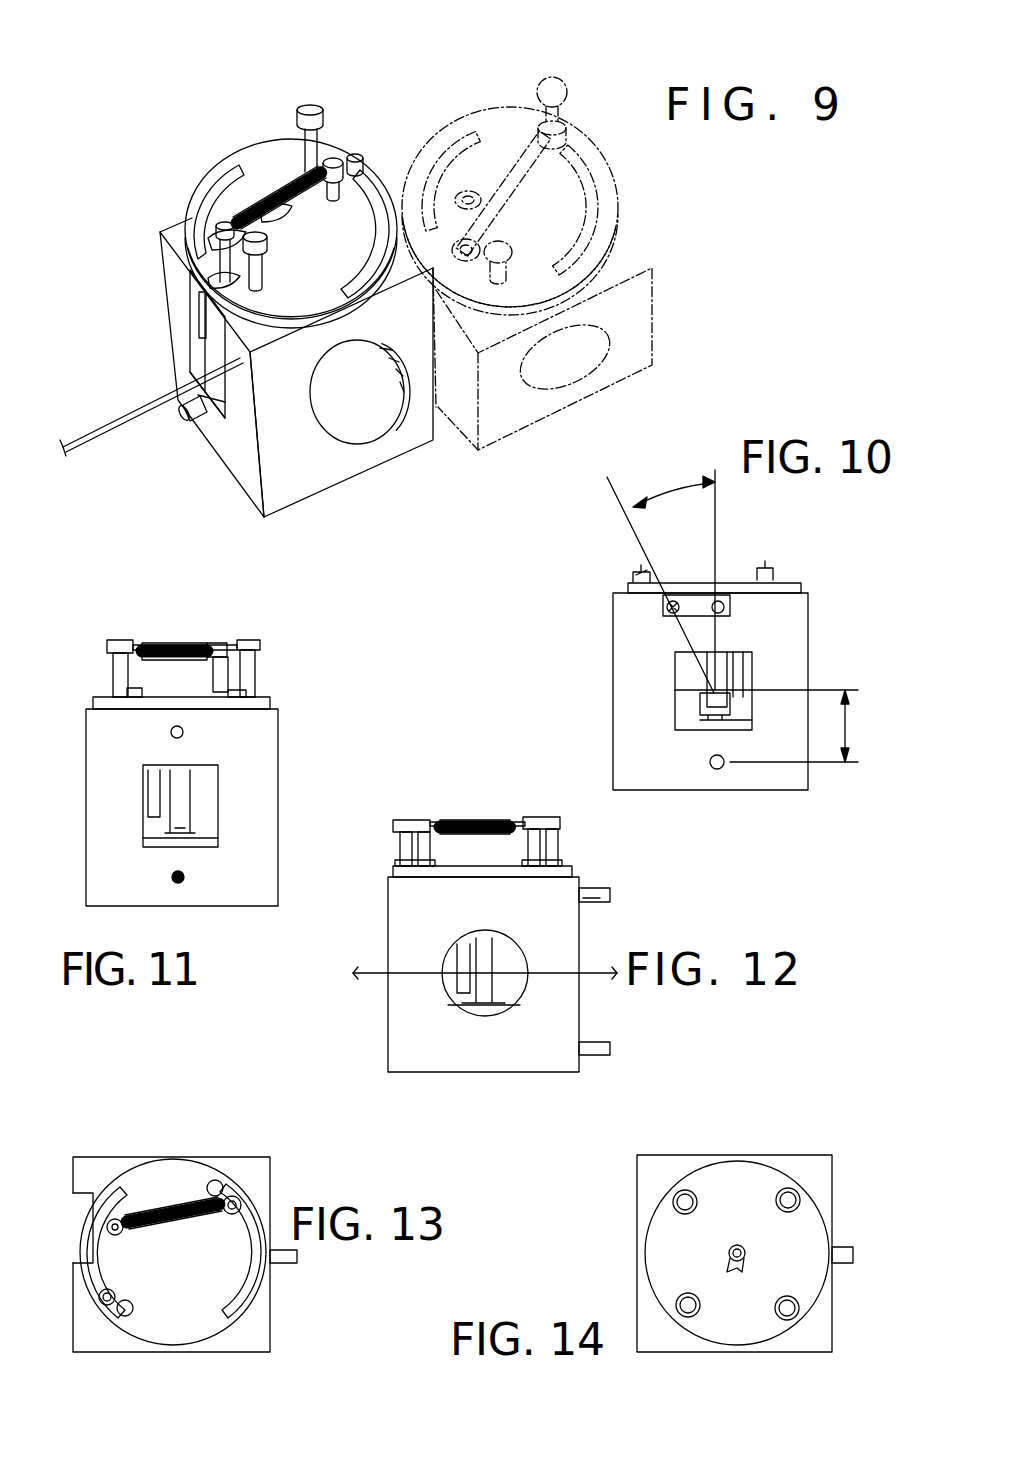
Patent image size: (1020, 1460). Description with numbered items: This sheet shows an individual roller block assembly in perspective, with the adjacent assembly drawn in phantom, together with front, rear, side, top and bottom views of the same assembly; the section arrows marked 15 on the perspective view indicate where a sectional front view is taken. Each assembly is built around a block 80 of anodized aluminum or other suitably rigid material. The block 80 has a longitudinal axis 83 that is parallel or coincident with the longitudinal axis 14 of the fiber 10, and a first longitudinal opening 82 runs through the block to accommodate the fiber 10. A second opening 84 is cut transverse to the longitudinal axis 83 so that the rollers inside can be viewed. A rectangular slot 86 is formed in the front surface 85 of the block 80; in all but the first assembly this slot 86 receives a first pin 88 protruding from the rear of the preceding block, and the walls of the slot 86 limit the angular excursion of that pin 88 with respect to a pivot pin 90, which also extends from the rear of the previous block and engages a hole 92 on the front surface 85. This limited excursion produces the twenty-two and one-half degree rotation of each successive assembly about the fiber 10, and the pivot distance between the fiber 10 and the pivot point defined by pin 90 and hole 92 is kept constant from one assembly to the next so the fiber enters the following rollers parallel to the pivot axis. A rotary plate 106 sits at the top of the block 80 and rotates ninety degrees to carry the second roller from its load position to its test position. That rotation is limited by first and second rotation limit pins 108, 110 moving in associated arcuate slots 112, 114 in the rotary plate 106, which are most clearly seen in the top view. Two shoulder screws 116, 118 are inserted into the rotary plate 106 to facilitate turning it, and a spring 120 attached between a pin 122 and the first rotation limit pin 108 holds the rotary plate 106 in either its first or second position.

In FIG. 9, the section line 15- 15 is at (287, 557).
In FIG. 9, the block 80 is at (315, 370).
In FIG. 11, the block 80 is at (245, 868).
In FIG. 12, the block 80 is at (483, 974).
In FIG. 13, the block 80 is at (258, 1157).
In FIG. 14, the block 80 is at (752, 1155).
In FIG. 9, the first longitudinal opening 82 is at (226, 420).
In FIG. 10, the first longitudinal opening 82 is at (680, 700).
In FIG. 9, the longitudinal axis 83 is at (139, 406).
In FIG. 9, the second opening 84 is at (368, 413).
In FIG. 12, the second opening 84 is at (455, 1000).
In FIG. 10, the front surface 85 is at (625, 745).
In FIG. 9, the rectangular slot 86 is at (205, 302).
In FIG. 10, the rectangular slot 86 is at (700, 612).
In FIG. 13, the rectangular slot 86 is at (78, 1205).
In FIG. 11, the first pin 88 is at (183, 733).
In FIG. 12, the first pin 88 is at (608, 895).
In FIG. 9, the pivot pin 90 is at (184, 420).
In FIG. 11, the pivot pin 90 is at (183, 882).
In FIG. 12, the pivot pin 90 is at (600, 1055).
In FIG. 10, the hole 92 is at (717, 769).
In FIG. 9, the fiber 10 is at (153, 393).
In FIG. 10, the fiber 10 is at (712, 689).
In FIG. 12, the fiber 10 is at (372, 972).
In FIG. 9, the longitudinal axis of the fiber 14 is at (139, 406).
In FIG. 13, the rotary plate 106 is at (232, 1320).
In FIG. 13, the first rotation limit pin 108 is at (240, 1203).
In FIG. 13, the second rotation limit pin 110 is at (107, 1305).
In FIG. 13, the arcuate slot 112 is at (240, 1283).
In FIG. 13, the arcuate slot 114 is at (112, 1217).
In FIG. 13, the shoulder screw 116 is at (125, 1316).
In FIG. 13, the shoulder screw 118 is at (216, 1182).
In FIG. 13, the spring 120 is at (172, 1210).
In FIG. 13, the pin 122 is at (125, 1195).